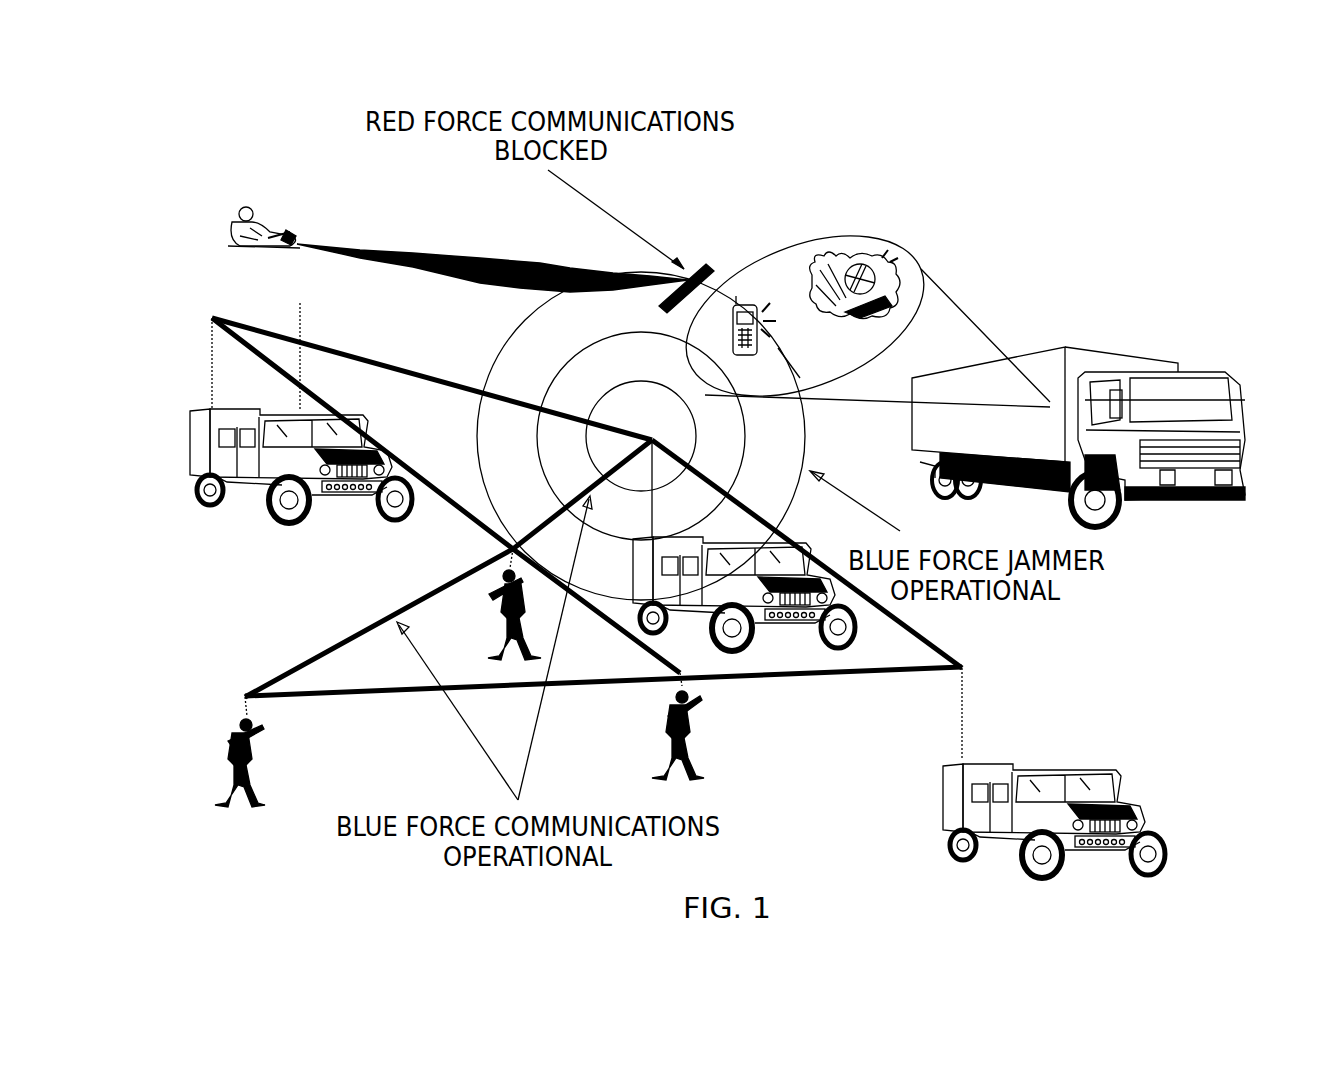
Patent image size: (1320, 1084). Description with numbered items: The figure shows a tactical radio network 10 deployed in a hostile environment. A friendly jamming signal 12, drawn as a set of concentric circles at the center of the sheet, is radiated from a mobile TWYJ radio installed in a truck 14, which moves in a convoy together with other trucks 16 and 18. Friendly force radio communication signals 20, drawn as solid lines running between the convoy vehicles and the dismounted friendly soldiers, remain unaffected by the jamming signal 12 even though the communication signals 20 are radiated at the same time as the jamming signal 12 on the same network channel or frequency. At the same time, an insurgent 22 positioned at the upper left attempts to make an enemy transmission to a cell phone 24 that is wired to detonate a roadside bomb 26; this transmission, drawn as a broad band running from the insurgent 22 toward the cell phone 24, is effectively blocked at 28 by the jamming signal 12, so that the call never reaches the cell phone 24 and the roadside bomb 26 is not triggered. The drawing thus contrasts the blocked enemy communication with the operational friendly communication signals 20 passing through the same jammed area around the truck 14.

The tactical radio network 10 is at (236, 578).
The friendly jamming signal 12 is at (622, 385).
The truck 14 is at (777, 632).
The truck 16 is at (1058, 768).
The truck 18 is at (238, 492).
The friendly force radio communication signals 20 is at (325, 348).
The insurgent 22 is at (243, 210).
The cell phone 24 is at (739, 305).
The roadside bomb 26 is at (895, 276).
The blocking point 28 is at (705, 266).